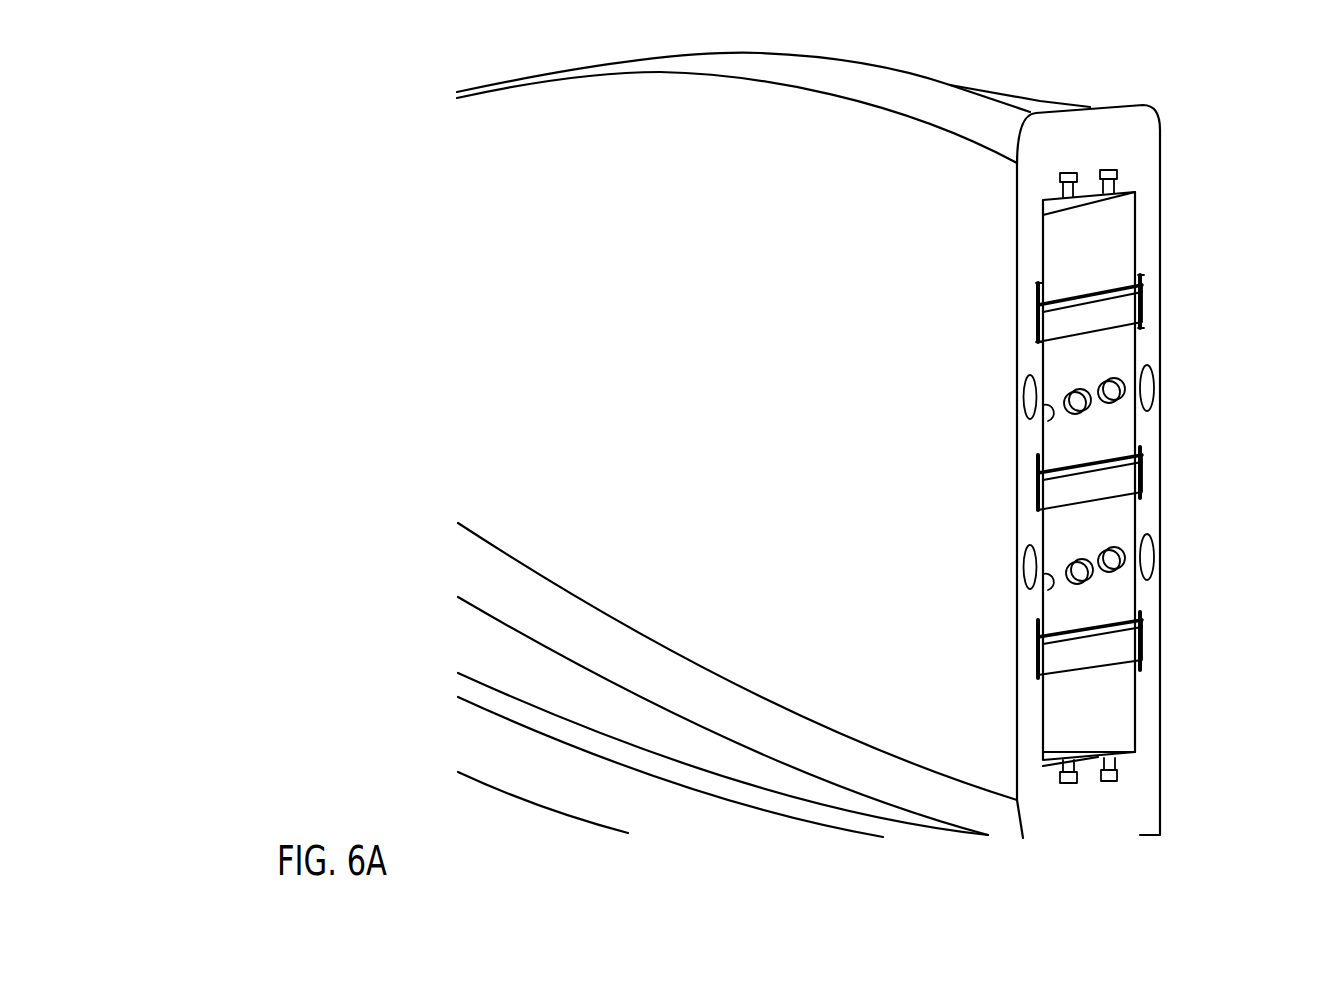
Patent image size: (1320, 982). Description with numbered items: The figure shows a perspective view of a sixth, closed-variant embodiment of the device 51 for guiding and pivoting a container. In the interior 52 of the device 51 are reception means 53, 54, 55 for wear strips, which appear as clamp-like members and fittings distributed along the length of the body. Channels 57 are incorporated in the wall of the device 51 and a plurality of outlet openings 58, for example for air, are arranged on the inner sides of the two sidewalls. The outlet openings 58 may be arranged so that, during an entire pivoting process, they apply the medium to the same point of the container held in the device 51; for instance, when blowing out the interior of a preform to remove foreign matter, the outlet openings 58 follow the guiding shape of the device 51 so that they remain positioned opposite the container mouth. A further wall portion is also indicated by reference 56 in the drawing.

The device 51 is at (1235, 103).
The interior 52 is at (1136, 220).
The reception means 53 is at (1037, 322).
The reception means 54 is at (1108, 170).
The reception means 55 is at (1108, 783).
The housing 56 is at (1028, 438).
The channels 57 is at (1030, 395).
The outlet openings 58 is at (1050, 416).